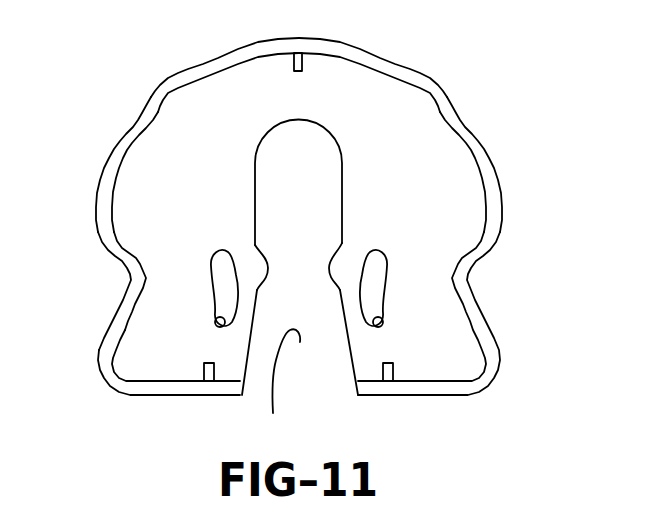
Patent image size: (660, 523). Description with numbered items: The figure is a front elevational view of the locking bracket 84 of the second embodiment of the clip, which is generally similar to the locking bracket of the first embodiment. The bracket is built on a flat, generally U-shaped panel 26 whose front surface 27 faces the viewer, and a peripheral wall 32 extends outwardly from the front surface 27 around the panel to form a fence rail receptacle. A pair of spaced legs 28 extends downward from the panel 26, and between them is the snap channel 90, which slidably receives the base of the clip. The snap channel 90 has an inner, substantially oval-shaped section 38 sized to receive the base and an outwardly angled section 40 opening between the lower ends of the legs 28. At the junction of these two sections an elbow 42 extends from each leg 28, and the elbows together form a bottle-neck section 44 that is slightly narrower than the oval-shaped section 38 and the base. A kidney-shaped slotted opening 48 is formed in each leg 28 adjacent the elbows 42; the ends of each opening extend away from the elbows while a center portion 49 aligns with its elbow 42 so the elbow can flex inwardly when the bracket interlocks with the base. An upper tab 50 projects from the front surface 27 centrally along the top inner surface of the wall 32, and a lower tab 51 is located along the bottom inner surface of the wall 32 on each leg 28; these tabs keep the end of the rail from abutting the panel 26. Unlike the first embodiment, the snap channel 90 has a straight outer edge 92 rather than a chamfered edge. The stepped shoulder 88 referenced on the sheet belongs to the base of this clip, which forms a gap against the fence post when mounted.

The panel 26 is at (172, 140).
The front surface 27 is at (221, 127).
The legs 28 is at (172, 310).
The peripheral wall 32 is at (145, 391).
The oval-shaped section 38 is at (289, 140).
The outwardly angled section 40 is at (300, 365).
The elbow 42 is at (332, 277).
The bottle-neck section 44 is at (303, 279).
The kidney-shaped slotted opening 48 is at (383, 322).
The center portion 49 is at (357, 288).
The upper tab 50 is at (298, 72).
The lower tab 51 is at (212, 362).
The locking bracket 84 is at (455, 101).
The stepped shoulder 88 is at (513, 522).
The snap channel 90 is at (307, 367).
The straight outer edge 92 is at (342, 177).